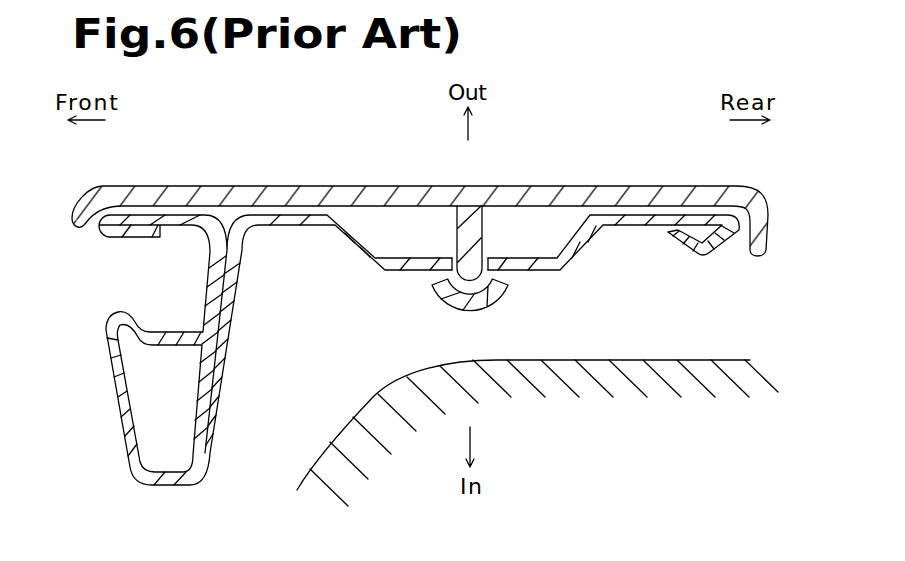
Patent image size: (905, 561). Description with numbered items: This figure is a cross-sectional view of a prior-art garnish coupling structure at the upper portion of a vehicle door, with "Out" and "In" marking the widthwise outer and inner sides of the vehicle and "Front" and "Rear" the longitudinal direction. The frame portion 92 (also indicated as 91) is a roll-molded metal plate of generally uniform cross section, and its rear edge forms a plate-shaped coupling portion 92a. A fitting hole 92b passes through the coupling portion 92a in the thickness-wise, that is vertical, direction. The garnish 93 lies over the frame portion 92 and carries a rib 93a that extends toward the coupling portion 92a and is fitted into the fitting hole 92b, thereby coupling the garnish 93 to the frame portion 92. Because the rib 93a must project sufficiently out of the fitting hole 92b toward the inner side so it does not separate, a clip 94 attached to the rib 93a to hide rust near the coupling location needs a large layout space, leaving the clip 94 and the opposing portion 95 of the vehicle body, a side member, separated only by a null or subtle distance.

The roof molding (alternative designation) 91 is at (108, 386).
The frame portion 92 is at (389, 350).
The coupling portion 92a is at (643, 227).
The fitting hole 92b is at (453, 260).
The garnish 93 is at (418, 186).
The rib 93a is at (483, 228).
The clip 94 is at (507, 297).
The opposing portion 95 is at (323, 450).